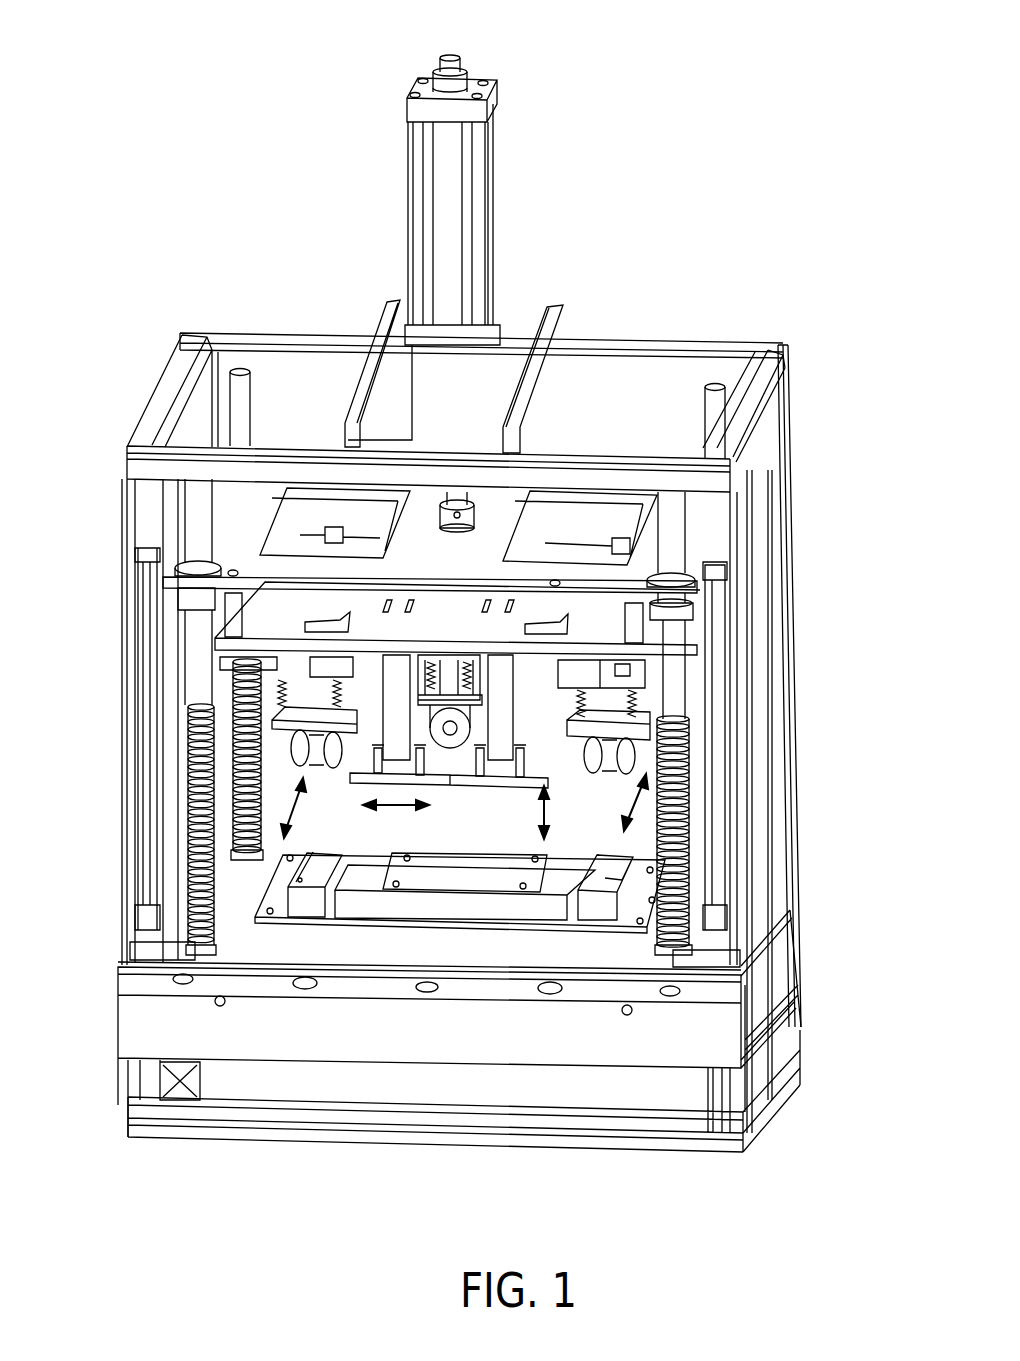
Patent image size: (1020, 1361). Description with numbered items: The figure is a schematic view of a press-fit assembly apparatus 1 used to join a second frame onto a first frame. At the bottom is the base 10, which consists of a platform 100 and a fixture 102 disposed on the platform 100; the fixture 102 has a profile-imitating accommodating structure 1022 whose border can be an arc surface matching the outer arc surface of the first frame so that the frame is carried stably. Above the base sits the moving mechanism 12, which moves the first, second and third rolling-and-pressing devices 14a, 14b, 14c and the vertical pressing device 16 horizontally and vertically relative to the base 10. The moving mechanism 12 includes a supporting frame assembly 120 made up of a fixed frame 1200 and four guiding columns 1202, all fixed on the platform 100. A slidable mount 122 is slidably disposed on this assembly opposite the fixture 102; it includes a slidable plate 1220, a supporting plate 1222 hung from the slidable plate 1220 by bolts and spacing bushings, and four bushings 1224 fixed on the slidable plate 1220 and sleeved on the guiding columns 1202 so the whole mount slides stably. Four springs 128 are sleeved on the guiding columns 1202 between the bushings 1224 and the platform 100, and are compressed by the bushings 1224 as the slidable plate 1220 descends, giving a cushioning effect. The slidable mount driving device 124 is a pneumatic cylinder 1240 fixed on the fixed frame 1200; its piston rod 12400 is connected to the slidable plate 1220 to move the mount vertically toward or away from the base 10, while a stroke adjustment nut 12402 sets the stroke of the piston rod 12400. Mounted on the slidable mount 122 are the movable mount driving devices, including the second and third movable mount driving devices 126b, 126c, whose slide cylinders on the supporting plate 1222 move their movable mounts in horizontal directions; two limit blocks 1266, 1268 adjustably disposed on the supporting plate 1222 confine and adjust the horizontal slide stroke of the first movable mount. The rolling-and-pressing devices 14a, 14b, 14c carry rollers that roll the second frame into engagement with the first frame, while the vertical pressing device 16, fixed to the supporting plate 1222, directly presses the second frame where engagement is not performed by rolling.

The press-fit assembly apparatus 1 is at (776, 58).
The base 10 is at (592, 1186).
The platform 100 is at (481, 948).
The fixture 102 is at (545, 905).
The accommodating structure 1022 is at (372, 878).
The moving mechanism 12 is at (797, 318).
The supporting frame assembly 120 is at (858, 488).
The fixed frame 1200 is at (765, 478).
The guiding columns 1202 is at (665, 548).
The slidable mount 122 is at (862, 555).
The slidable plate 1220 is at (693, 565).
The supporting plate 1222 is at (652, 660).
The bushings 1224 is at (662, 624).
The slidable mount driving device 124 is at (648, 38).
The pneumatic cylinder 1240 is at (468, 199).
The piston rod 12400 is at (458, 498).
The stroke adjustment nut 12402 is at (462, 68).
The limit block 1266 is at (622, 538).
The limit block 1268 is at (332, 527).
The second movable mount driving device 126b is at (644, 668).
The third movable mount driving device 126c is at (275, 672).
The springs 128 is at (662, 845).
The first rolling-and-pressing device 14a is at (456, 762).
The second rolling-and-pressing device 14b is at (645, 758).
The third rolling-and-pressing device 14c is at (280, 755).
The vertical pressing device 16 is at (497, 790).